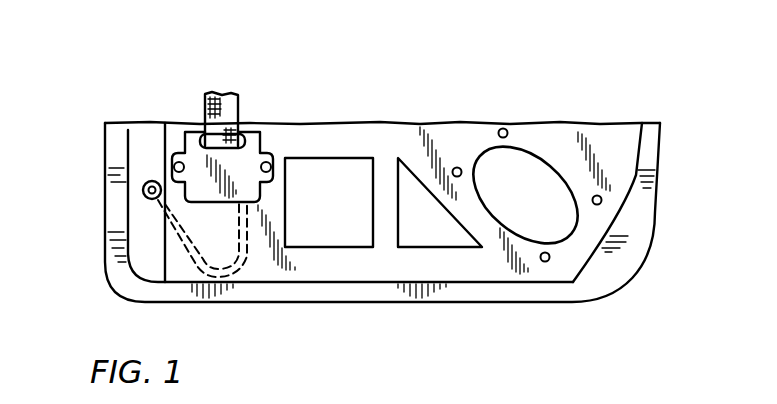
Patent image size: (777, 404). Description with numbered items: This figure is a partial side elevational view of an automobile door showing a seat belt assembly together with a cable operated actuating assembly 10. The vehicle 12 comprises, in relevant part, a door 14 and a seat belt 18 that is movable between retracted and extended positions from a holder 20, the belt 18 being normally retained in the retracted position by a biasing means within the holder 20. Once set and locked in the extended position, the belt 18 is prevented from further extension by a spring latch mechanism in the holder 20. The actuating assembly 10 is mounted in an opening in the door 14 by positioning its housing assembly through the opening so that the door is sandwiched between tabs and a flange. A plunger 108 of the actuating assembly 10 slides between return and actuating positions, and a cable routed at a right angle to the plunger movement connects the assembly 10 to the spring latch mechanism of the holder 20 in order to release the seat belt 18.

The cable operated actuating assembly 10 is at (146, 148).
The vehicle 12 is at (386, 106).
The door 14 is at (567, 131).
The seat belt 18 is at (231, 107).
The holder 20 is at (247, 153).
The plunger 108 is at (143, 191).